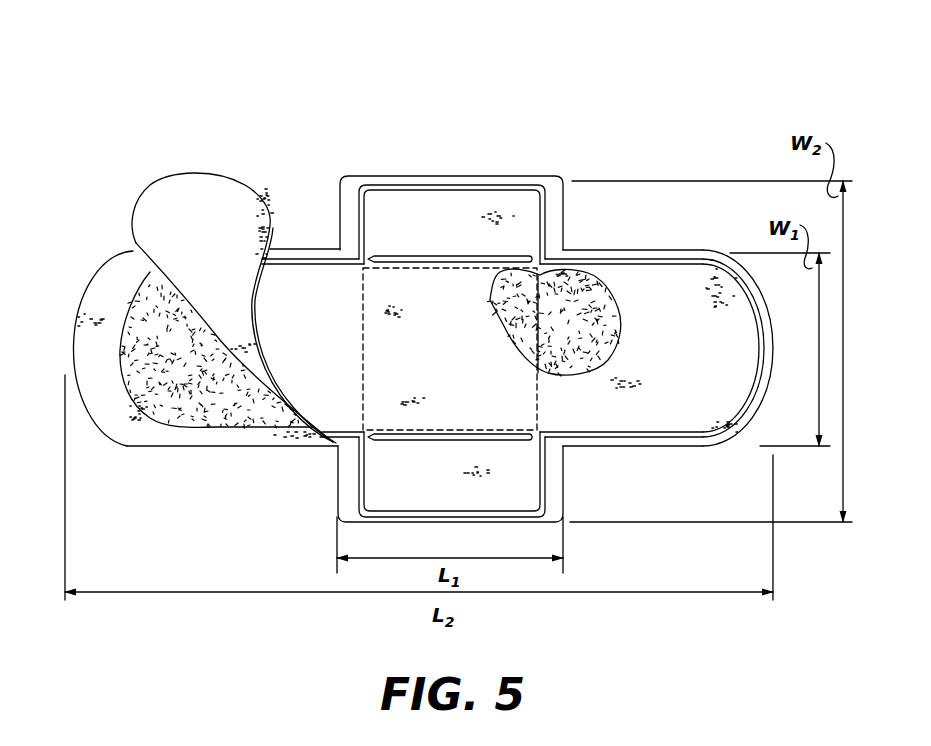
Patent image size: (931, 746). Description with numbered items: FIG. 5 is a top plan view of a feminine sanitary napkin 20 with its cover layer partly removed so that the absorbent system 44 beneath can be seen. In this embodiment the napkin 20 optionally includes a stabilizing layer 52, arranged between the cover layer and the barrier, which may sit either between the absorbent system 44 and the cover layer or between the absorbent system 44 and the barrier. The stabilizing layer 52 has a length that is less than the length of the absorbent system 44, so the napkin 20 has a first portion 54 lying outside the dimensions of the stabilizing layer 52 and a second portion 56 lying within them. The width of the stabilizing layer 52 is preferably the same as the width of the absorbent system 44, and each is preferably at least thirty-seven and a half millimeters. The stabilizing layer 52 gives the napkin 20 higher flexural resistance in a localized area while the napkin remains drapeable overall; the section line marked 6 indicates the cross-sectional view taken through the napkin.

The feminine sanitary napkin 20 is at (215, 82).
The absorbent system 44 is at (201, 405).
The stabilizing layer 52 is at (383, 291).
The first portion 54 is at (313, 293).
The second portion 56 is at (458, 293).
The section line 6- 6 is at (799, 307).